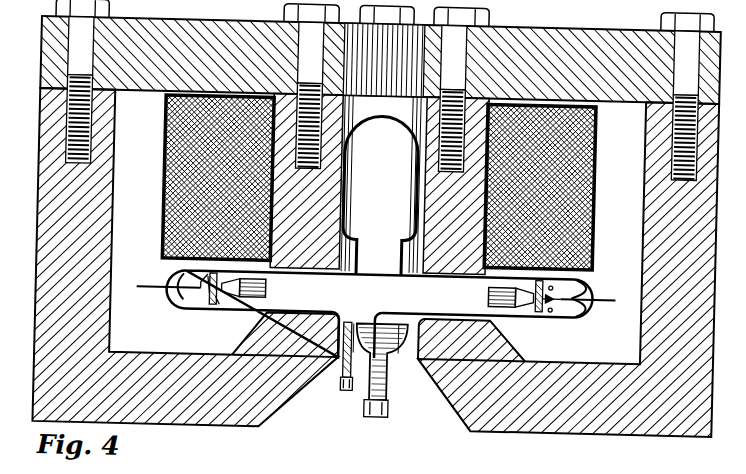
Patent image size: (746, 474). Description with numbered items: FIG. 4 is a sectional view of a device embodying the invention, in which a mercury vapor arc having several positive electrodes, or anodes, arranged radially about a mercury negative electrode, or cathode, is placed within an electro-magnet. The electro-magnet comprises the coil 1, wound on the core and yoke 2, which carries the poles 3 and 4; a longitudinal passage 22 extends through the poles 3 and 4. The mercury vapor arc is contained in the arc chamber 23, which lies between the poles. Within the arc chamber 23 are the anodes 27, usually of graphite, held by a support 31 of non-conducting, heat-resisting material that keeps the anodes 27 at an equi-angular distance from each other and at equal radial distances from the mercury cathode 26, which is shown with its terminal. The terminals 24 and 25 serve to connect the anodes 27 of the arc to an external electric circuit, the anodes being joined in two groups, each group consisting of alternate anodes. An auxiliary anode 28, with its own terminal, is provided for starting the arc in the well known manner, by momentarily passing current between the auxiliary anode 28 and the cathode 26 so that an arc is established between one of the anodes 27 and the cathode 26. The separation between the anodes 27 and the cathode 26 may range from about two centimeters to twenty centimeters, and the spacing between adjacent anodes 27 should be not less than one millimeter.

The coil 1 is at (168, 181).
The core and yoke 2 is at (151, 88).
The pole 3 is at (442, 186).
The pole 4 is at (289, 320).
The longitudinal passage 22 is at (382, 148).
The arc chamber 23 is at (410, 219).
The terminal 24 is at (148, 282).
The terminal 25 is at (612, 287).
The mercury cathode 26 is at (396, 373).
The anodes 27 is at (254, 296).
The auxiliary anode 28 is at (356, 365).
The support 31 is at (217, 296).